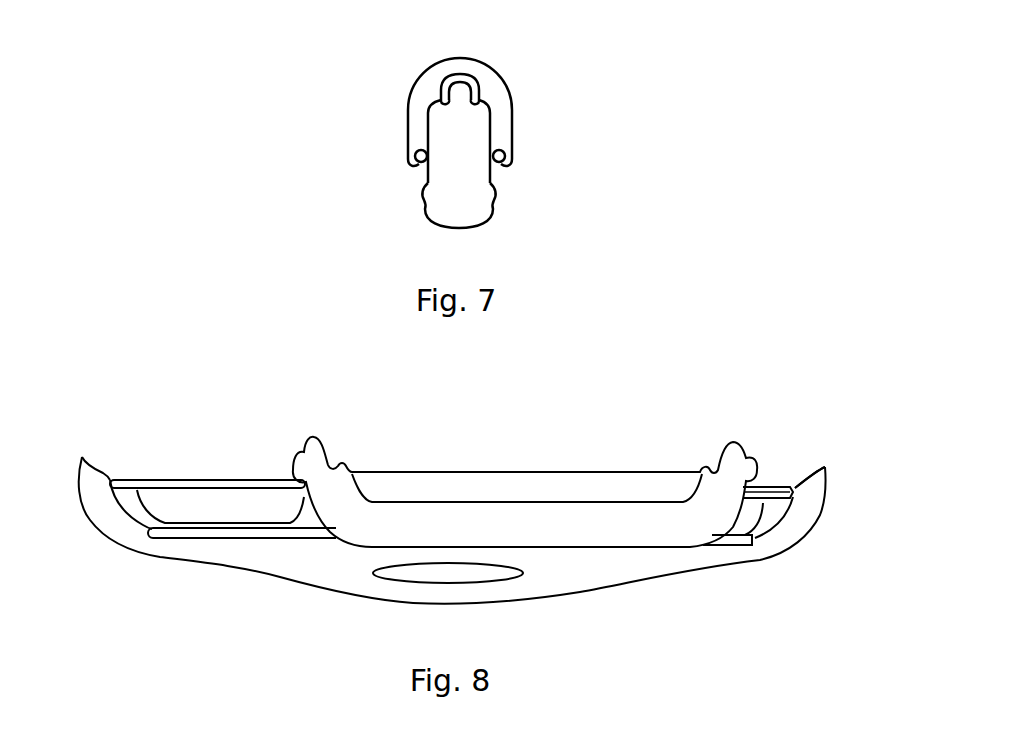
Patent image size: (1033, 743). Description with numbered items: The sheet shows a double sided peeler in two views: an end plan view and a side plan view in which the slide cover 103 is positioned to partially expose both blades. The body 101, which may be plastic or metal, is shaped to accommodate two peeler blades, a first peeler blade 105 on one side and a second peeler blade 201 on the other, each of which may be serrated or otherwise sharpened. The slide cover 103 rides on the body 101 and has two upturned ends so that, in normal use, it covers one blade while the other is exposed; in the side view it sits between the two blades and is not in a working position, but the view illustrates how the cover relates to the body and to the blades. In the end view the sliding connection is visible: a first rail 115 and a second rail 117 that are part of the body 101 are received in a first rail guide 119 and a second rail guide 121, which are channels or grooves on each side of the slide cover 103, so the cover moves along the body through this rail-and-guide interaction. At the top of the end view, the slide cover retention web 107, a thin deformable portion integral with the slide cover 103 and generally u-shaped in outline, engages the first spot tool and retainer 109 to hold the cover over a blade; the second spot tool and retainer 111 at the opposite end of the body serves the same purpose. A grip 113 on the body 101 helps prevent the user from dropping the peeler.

In FIG. 7, the body 101 is at (472, 207).
In FIG. 8, the body 101 is at (293, 563).
In FIG. 8, the slide cover 103 is at (597, 488).
In FIG. 8, the first peeler blade 105 is at (177, 487).
In FIG. 7, the slide cover retention web 107 is at (457, 83).
In FIG. 7, the first spot tool and retainer 109 is at (477, 83).
In FIG. 8, the first spot tool and retainer 109 is at (823, 467).
In FIG. 8, the second spot tool and retainer 111 is at (82, 457).
In FIG. 8, the grip 113 is at (502, 573).
In FIG. 7, the first rail 115 is at (506, 152).
In FIG. 7, the second rail 117 is at (418, 151).
In FIG. 7, the first rail guide 119 is at (508, 163).
In FIG. 7, the second rail guide 121 is at (407, 163).
In FIG. 8, the second peeler blade 201 is at (770, 493).